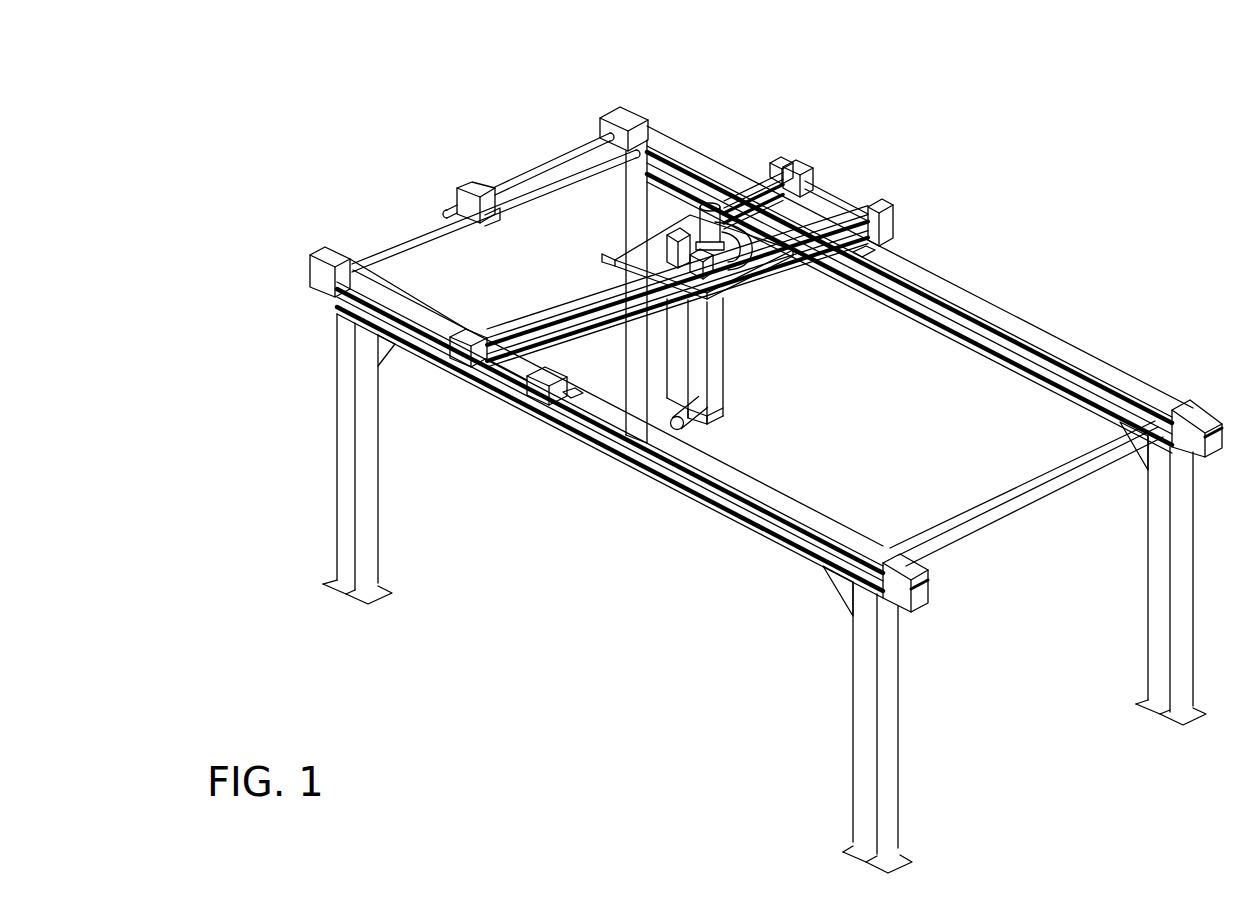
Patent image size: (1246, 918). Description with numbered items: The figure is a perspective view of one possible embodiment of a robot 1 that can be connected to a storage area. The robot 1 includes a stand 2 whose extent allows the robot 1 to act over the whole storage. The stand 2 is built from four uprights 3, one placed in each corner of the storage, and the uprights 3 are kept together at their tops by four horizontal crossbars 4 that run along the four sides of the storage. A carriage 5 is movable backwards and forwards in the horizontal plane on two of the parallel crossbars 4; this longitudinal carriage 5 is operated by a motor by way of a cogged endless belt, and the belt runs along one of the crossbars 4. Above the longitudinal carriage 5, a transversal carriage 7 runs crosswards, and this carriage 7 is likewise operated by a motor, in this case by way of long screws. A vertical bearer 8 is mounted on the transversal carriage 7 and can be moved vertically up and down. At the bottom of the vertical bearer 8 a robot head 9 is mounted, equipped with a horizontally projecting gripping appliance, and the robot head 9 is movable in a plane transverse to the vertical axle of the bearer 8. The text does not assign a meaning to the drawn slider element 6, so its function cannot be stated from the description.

The robot 1 is at (531, 199).
The stand 2 is at (687, 157).
The uprights 3 is at (887, 658).
The horizontal crossbars 4 is at (948, 533).
The carriage 5 is at (823, 235).
The slider block 6 is at (472, 189).
The transversal carriage 7 is at (648, 247).
The vertical bearer 8 is at (620, 190).
The robot head 9 is at (688, 421).